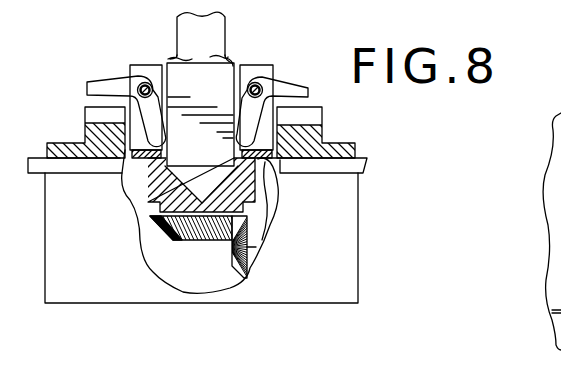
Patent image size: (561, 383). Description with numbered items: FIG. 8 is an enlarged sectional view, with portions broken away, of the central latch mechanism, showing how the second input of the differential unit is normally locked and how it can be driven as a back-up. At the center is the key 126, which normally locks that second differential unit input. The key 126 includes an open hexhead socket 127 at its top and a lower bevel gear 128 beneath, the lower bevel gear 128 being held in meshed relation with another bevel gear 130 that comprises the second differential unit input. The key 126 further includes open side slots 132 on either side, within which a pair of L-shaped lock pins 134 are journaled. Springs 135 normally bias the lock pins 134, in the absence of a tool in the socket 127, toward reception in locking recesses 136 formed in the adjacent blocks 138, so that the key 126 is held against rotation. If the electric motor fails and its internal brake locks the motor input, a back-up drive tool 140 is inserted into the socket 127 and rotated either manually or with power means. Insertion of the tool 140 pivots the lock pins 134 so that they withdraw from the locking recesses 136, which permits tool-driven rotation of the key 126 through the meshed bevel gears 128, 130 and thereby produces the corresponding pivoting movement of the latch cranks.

The key 126 is at (151, 185).
The open hexhead socket 127 is at (229, 58).
The lower bevel gear 128 is at (186, 238).
The bevel gear 130 is at (253, 265).
The open side slots 132 is at (159, 77).
The L-shaped lock pins 134 is at (99, 80).
The springs 135 is at (261, 66).
The locking recesses 136 is at (93, 110).
The blocks 138 is at (310, 174).
The back-up drive tool 140 is at (177, 37).